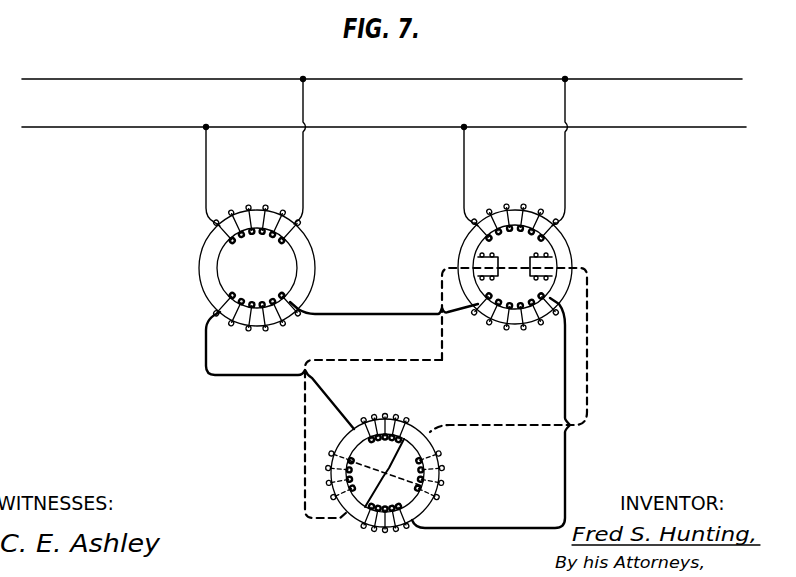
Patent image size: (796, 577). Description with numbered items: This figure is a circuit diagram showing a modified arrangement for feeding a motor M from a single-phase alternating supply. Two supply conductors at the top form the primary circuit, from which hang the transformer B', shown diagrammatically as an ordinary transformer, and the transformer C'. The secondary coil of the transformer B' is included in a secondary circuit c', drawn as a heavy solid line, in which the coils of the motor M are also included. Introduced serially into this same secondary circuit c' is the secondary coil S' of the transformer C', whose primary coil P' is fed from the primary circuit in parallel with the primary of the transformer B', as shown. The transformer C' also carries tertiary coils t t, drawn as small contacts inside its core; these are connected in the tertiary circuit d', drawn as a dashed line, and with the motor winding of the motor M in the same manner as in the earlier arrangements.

The transformer B' is at (257, 268).
The primary coil P' is at (515, 209).
The transformer C' is at (502, 267).
The secondary coil S' is at (515, 324).
The tertiary coils t is at (501, 277).
The secondary circuit c' is at (388, 410).
The tertiary circuit d' is at (458, 393).
The motor M is at (385, 490).